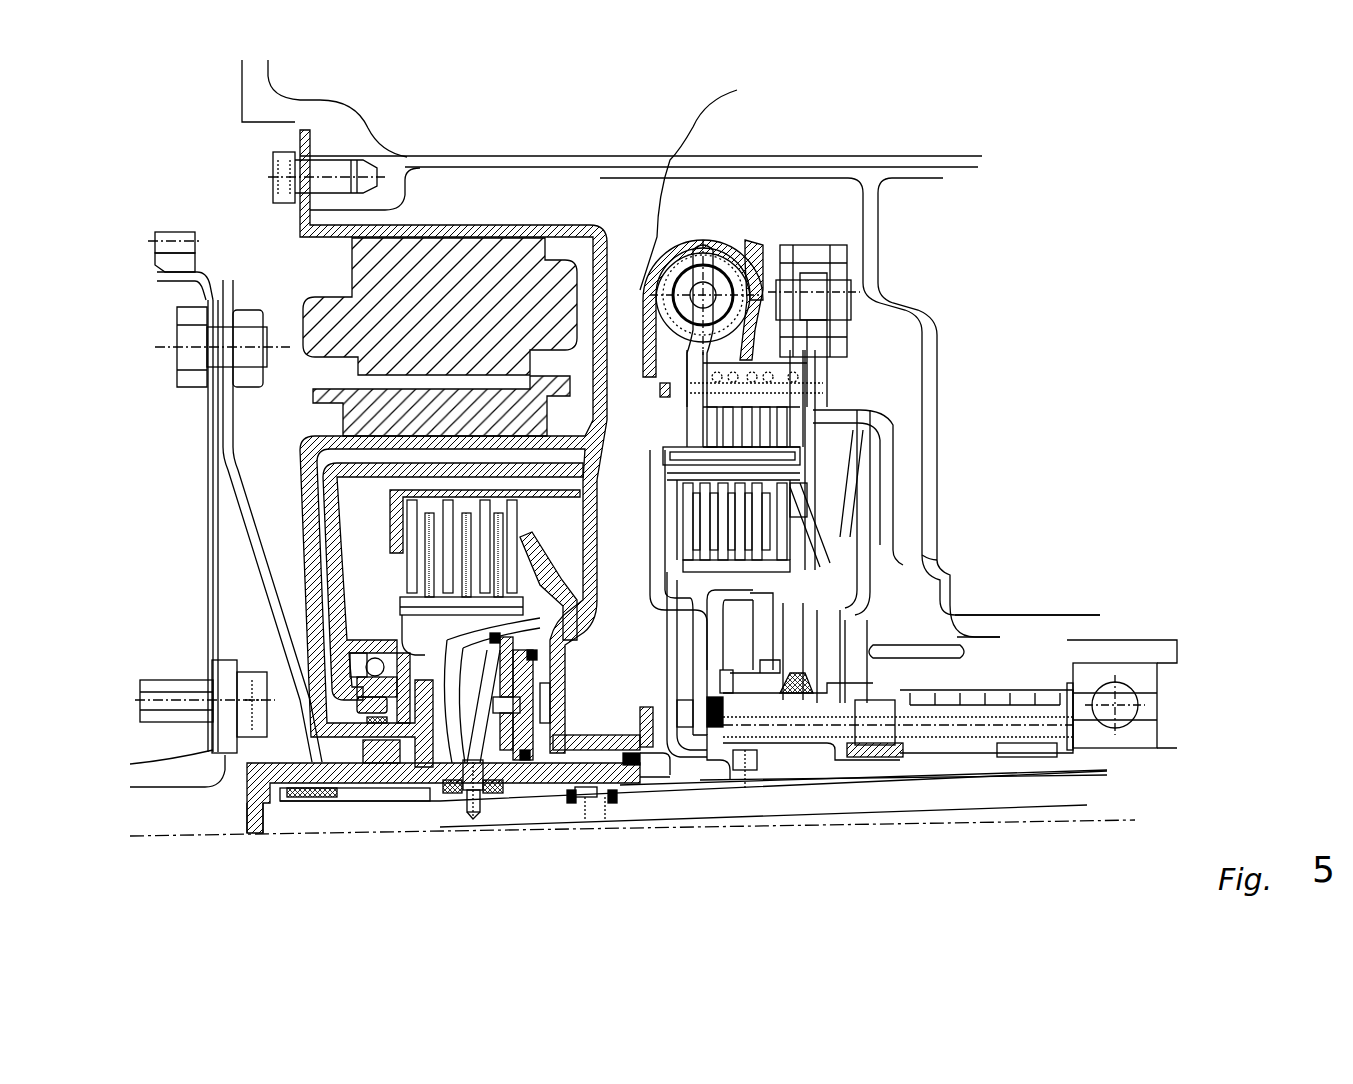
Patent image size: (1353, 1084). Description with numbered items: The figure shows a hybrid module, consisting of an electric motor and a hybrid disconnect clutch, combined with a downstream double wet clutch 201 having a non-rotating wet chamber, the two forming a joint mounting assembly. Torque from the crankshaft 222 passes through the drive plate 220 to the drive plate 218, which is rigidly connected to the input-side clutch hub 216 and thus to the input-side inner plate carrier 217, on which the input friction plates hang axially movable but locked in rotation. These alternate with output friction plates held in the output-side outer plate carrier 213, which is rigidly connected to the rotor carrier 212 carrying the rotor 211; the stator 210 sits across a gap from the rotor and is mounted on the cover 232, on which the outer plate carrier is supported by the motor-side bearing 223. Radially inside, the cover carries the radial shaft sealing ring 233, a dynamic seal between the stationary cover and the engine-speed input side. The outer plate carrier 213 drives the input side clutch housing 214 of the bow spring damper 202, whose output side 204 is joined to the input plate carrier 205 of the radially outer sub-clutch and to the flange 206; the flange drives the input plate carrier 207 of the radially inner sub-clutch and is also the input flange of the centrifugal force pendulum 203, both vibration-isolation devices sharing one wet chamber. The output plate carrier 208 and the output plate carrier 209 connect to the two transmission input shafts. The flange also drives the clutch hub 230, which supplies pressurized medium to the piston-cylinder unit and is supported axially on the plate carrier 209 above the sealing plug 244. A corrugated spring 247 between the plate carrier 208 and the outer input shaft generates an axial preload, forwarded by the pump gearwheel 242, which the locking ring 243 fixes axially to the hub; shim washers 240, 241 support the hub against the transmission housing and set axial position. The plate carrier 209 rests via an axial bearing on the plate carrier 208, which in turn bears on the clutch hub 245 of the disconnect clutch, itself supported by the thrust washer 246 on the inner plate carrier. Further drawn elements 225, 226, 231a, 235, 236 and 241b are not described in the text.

The double wet clutch 201 is at (905, 362).
The bow spring damper 202 is at (688, 263).
The centrifugal force pendulum 203 is at (786, 263).
The output side of the bow spring damper 204 is at (690, 437).
The input plate carrier of the outer sub-clutch 205 is at (825, 412).
The flange 206 is at (793, 373).
The input plate carrier of the inner sub-clutch 207 is at (837, 500).
The output plate carrier of the outer sub-clutch 208 is at (660, 568).
The output plate carrier of the inner sub-clutch 209 is at (670, 640).
The stator 210 is at (435, 270).
The rotor 211 is at (575, 282).
The rotor carrier 212 is at (323, 450).
The output-side outer plate carrier 213 is at (397, 517).
The input side clutch housing 214 is at (655, 352).
The input-side clutch hub 216 is at (247, 837).
The input-side inner plate carrier 217 is at (400, 613).
The drive plate 218 is at (243, 475).
The drive plate 220 is at (213, 495).
The crankshaft 222 is at (137, 755).
The motor-side bearing 223 is at (387, 723).
The housing plate 225 is at (880, 167).
The bearing block 226 is at (1142, 678).
The clutch hub 230 is at (960, 737).
The housing wall portion 231a is at (940, 593).
The cover 232 is at (295, 138).
The radial shaft sealing ring 233 is at (608, 702).
The hub flange 235 is at (537, 790).
The bolt 236 is at (458, 707).
The shim washer 240 is at (953, 647).
The shim washer 241 is at (957, 637).
The lever 241b is at (748, 675).
The pump gearwheel 242 is at (960, 612).
The locking ring 243 is at (890, 707).
The sealing plug 244 is at (707, 740).
The clutch hub of the hybrid disconnect clutch 245 is at (640, 790).
The thrust washer 246 is at (430, 765).
The corrugated spring 247 is at (760, 773).